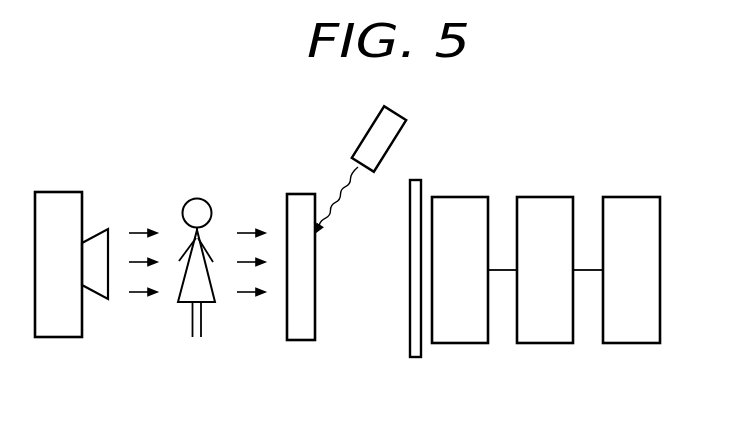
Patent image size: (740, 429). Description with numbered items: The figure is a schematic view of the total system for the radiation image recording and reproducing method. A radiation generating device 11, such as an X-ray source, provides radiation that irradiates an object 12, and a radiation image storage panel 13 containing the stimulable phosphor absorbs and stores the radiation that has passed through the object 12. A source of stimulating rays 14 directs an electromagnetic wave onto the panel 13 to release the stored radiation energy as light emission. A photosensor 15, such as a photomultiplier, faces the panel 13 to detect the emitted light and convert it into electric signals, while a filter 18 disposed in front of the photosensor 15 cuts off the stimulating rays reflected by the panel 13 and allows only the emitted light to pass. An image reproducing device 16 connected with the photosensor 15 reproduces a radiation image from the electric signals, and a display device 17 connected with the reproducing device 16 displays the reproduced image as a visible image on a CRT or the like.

The radiation generating device 11 is at (60, 330).
The object 12 is at (192, 318).
The radiation image storage panel 13 is at (303, 332).
The source of stimulating rays 14 is at (397, 125).
The photosensor 15 is at (467, 333).
The image reproducing device 16 is at (552, 333).
The display device 17 is at (637, 333).
The filter 18 is at (408, 328).